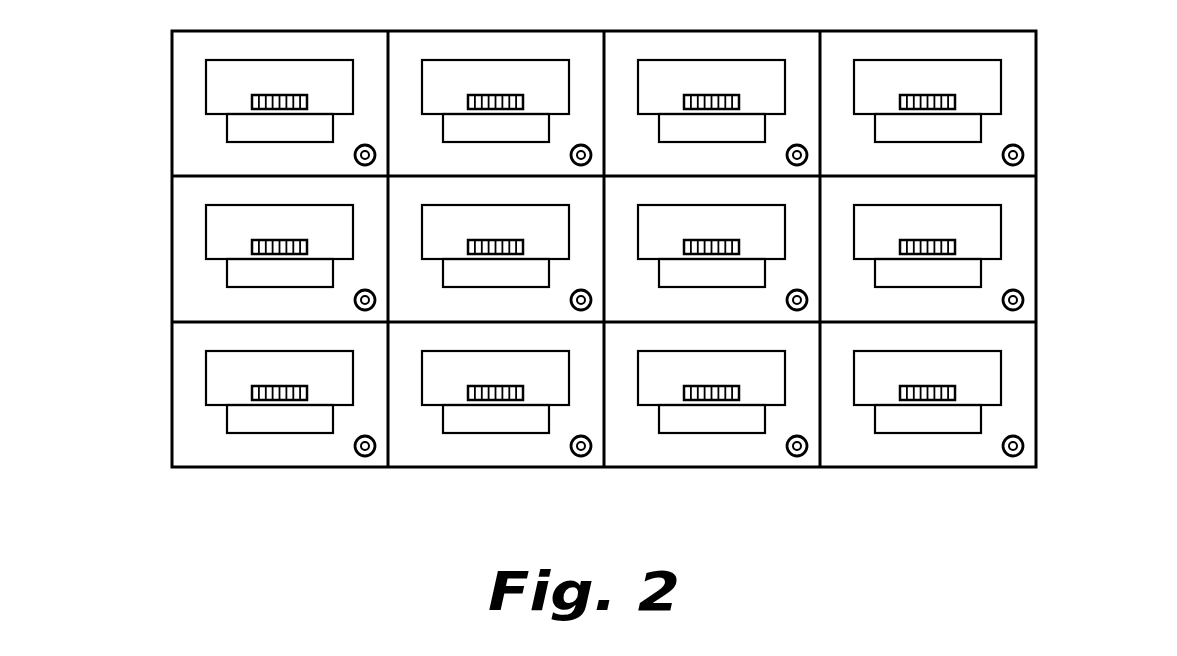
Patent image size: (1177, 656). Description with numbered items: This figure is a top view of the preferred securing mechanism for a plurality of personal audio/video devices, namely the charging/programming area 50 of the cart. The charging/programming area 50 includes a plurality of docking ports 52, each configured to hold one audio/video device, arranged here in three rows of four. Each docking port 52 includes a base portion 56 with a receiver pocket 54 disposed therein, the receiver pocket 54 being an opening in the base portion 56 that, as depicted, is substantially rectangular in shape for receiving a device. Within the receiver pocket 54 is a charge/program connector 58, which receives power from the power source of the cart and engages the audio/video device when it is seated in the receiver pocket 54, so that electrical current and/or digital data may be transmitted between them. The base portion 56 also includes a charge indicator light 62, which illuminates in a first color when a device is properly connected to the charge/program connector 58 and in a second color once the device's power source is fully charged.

The charging/programming area 50 is at (937, 512).
The docking port 52 is at (1027, 218).
The receiver pocket 54 is at (199, 206).
The base portion 56 is at (180, 272).
The charge/program connector 58 is at (193, 385).
The charge indicator light 62 is at (334, 499).